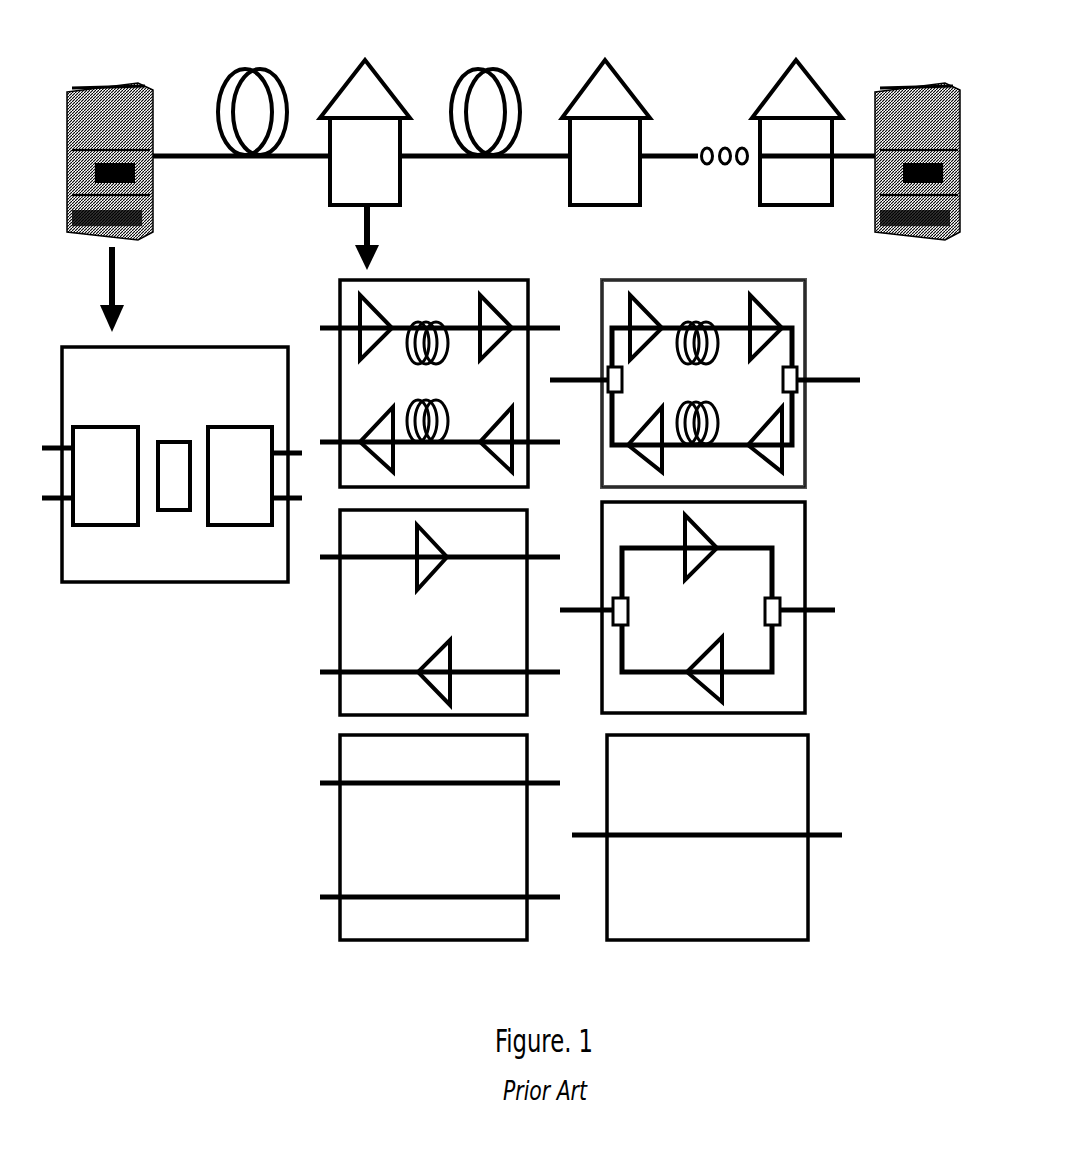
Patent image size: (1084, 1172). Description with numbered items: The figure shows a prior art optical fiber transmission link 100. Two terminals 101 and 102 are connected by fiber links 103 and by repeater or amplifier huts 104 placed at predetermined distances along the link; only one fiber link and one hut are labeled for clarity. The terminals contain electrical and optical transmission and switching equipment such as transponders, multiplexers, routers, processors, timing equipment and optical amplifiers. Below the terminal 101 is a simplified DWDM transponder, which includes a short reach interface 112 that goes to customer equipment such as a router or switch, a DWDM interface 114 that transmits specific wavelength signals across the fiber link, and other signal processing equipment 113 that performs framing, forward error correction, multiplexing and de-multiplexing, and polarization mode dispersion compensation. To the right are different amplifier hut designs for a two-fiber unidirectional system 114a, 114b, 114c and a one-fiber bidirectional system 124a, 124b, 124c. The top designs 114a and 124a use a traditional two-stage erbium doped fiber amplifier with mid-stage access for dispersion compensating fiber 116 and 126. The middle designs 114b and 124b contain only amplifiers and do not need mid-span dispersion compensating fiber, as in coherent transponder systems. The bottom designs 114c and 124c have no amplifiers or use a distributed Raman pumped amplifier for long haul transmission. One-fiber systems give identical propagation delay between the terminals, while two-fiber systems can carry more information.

The optical fiber transmission link 100 is at (487, 168).
The terminal 101 is at (157, 100).
The terminal 102 is at (890, 77).
The fiber link 103 is at (245, 167).
The repeater or amplifier hut 104 is at (322, 180).
The short reach interface 112 is at (90, 400).
The signal processing equipment 113 is at (182, 517).
The DWDM interface 114 is at (263, 412).
The two-fiber unidirectional amplifier hut design 114a is at (335, 358).
The two-fiber unidirectional amplifier hut design 114b is at (335, 588).
The two-fiber unidirectional amplifier hut design 114c is at (335, 815).
The dispersion compensating fiber 116 is at (407, 403).
The one-fiber bidirectional amplifier hut design 124a is at (808, 348).
The one-fiber bidirectional amplifier hut design 124b is at (808, 580).
The one-fiber bidirectional amplifier hut design 124c is at (812, 800).
The dispersion compensating fiber 126 is at (677, 402).